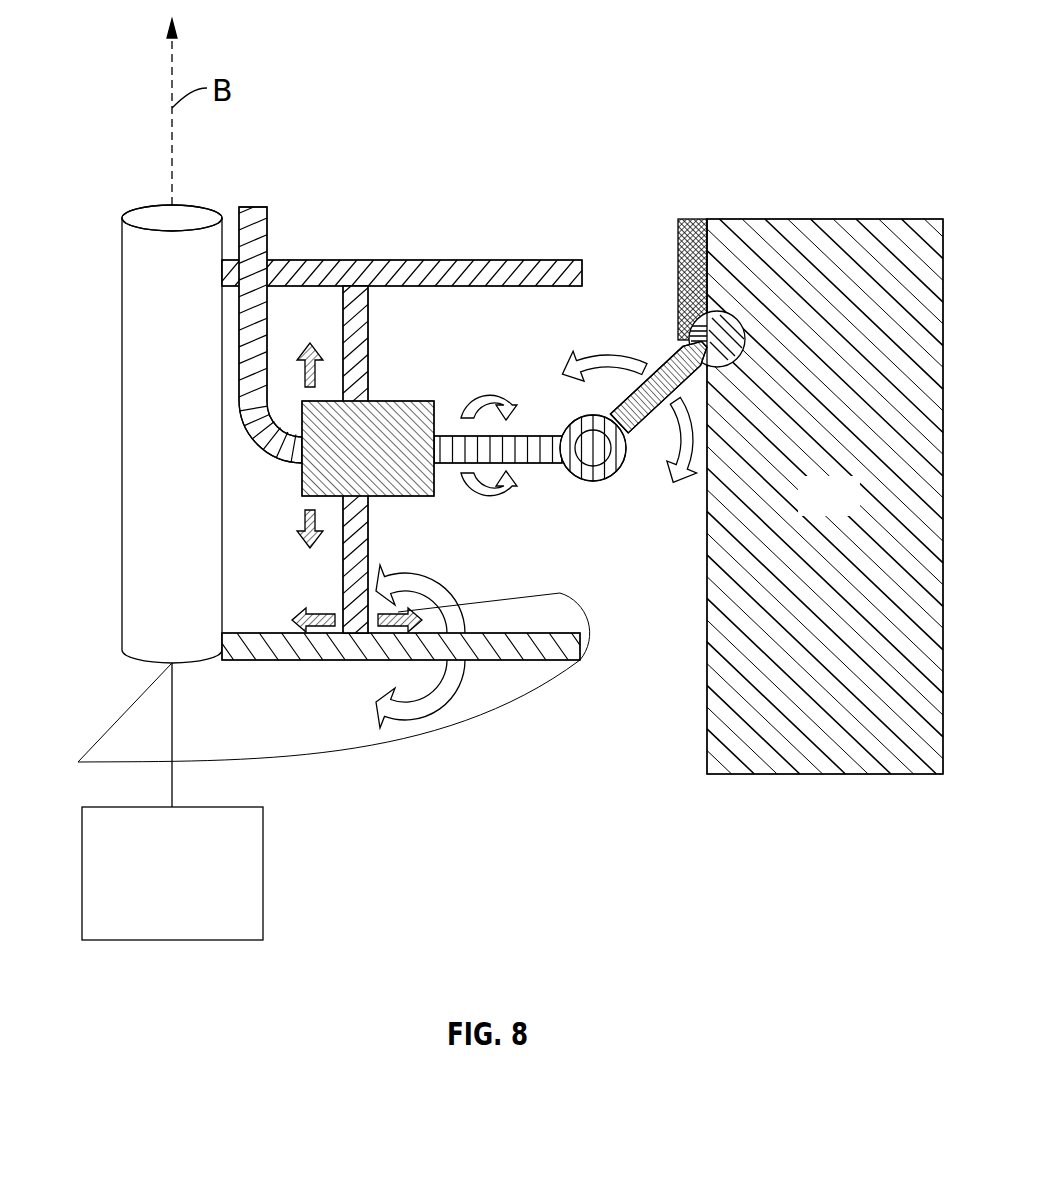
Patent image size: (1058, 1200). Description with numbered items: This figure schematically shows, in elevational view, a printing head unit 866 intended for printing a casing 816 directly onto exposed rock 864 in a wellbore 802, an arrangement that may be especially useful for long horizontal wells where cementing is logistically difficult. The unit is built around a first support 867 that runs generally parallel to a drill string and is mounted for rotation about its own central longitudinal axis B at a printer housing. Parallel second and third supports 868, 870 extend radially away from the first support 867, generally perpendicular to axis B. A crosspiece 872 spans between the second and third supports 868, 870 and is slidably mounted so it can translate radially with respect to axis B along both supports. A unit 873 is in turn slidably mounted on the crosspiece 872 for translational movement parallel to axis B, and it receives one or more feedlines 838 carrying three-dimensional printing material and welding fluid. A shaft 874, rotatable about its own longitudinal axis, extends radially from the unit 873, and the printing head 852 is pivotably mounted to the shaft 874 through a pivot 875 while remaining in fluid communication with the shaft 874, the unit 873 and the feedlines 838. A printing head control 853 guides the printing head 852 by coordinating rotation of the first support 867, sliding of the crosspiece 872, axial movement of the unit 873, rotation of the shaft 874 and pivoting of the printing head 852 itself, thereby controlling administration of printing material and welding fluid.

The wellbore 802 is at (669, 696).
The casing 816 is at (692, 219).
The feedlines 838 is at (272, 243).
The printing head 852 is at (692, 352).
The printing head control 853 is at (170, 942).
The exposed rock 864 is at (852, 511).
The printing head unit 866 is at (116, 560).
The first support 867 is at (155, 212).
The second support 868 is at (514, 260).
The third support 870 is at (500, 648).
The crosspiece 872 is at (358, 328).
The unit 873 is at (406, 401).
The shaft 874 is at (532, 463).
The pivot 875 is at (596, 482).